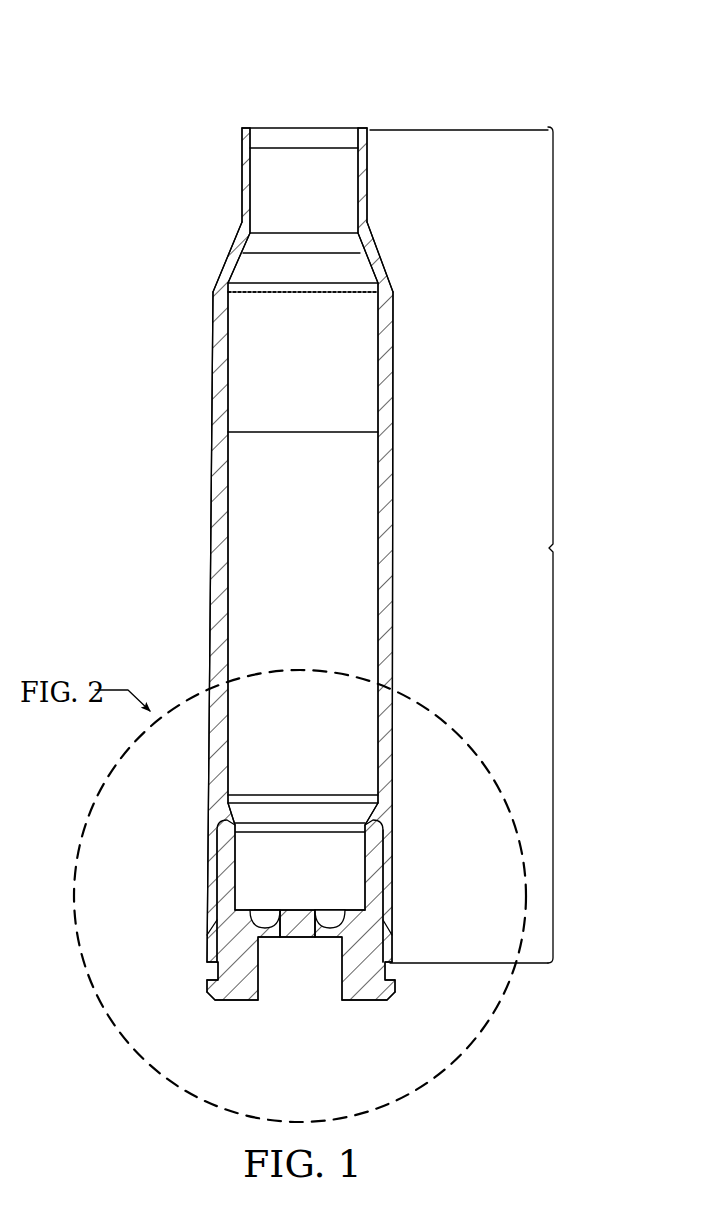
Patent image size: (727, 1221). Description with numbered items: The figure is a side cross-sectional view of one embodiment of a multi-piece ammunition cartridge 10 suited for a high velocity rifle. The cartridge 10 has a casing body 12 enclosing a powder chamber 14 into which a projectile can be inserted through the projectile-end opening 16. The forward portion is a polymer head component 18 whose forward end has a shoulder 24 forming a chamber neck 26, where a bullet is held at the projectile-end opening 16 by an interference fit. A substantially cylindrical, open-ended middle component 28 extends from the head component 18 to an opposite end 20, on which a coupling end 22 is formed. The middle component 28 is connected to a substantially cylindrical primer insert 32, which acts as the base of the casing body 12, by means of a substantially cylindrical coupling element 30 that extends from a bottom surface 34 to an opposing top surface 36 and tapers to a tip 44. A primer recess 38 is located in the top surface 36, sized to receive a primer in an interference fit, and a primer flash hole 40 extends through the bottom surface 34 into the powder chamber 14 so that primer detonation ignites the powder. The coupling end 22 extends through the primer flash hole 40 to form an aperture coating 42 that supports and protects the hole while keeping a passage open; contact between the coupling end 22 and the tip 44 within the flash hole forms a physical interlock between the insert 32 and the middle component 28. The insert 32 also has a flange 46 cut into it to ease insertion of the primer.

The ammunition cartridge 10 is at (192, 82).
The casing body 12 is at (486, 545).
The powder chamber 14 is at (315, 574).
The projectile-end opening 16 is at (314, 117).
The head component 18 is at (211, 322).
The opposite end 20 is at (283, 843).
The coupling end 22 is at (381, 857).
The shoulder 24 is at (230, 262).
The chamber neck 26 is at (242, 172).
The middle component 28 is at (211, 523).
The coupling element 30 is at (381, 897).
The primer insert 32 is at (196, 1002).
The bottom surface 34 is at (390, 1001).
The top surface 36 is at (227, 1000).
The primer recess 38 is at (260, 973).
The primer flash hole 40 is at (320, 916).
The aperture coating 42 is at (280, 916).
The tip 44 is at (381, 805).
The flange 46 is at (213, 967).